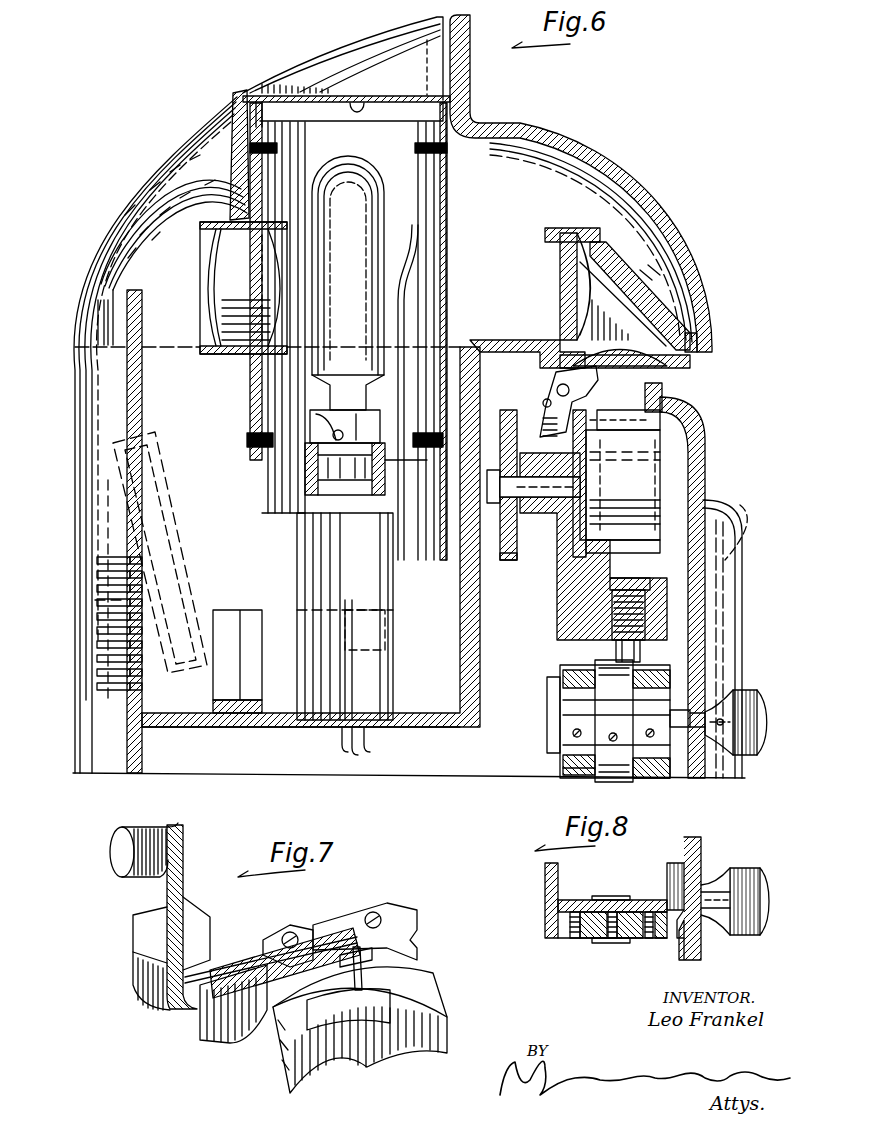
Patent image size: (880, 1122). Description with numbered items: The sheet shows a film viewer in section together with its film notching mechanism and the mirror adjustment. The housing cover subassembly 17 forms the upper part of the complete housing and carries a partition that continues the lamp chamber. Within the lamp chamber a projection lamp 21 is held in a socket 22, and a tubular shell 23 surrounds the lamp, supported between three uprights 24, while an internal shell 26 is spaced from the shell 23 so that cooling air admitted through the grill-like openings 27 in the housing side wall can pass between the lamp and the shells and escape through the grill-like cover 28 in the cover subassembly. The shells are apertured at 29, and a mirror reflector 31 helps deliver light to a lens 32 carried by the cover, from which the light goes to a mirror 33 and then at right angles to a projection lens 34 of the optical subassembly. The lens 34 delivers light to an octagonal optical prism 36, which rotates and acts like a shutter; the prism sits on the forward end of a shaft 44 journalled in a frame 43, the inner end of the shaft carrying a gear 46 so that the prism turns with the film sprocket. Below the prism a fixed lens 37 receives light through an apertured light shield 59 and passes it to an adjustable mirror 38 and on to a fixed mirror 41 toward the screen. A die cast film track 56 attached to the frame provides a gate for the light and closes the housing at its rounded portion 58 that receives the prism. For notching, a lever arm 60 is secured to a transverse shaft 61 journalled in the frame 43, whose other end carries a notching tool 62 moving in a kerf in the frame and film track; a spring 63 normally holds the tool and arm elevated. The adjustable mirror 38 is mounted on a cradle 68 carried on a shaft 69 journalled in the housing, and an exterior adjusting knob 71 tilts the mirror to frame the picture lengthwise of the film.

In FIG. 6, the housing cover subassembly 17 is at (713, 284).
In FIG. 6, the projection lamp 21 is at (378, 180).
In FIG. 6, the socket 22 is at (380, 478).
In FIG. 6, the tubular shell 23 is at (253, 505).
In FIG. 6, the uprights 24 is at (258, 690).
In FIG. 6, the internal shell 26 is at (265, 396).
In FIG. 6, the grill-like openings 27 is at (100, 690).
In FIG. 6, the grill-like cover 28 is at (380, 99).
In FIG. 6, the aperture 29 is at (438, 292).
In FIG. 6, the mirror reflector 31 is at (207, 302).
In FIG. 6, the lens 32 is at (560, 305).
In FIG. 6, the mirror 33 is at (590, 256).
In FIG. 6, the lens 34 is at (642, 363).
In FIG. 6, the octagonal optical prism 36 is at (650, 488).
In FIG. 6, the fixed lens 37 is at (643, 583).
In FIG. 6, the adjustable mirror 38 is at (560, 758).
In FIG. 8, the adjustable mirror 38 is at (647, 900).
In FIG. 6, the fixed mirror 41 is at (165, 458).
In FIG. 6, the frame 43 is at (557, 567).
In FIG. 6, the shaft 44 is at (540, 488).
In FIG. 6, the gear 46 is at (498, 557).
In FIG. 6, the die cast film track 56 is at (663, 393).
In FIG. 7, the die cast film track 56 is at (282, 1055).
In FIG. 6, the rounded portion 58 is at (695, 425).
In FIG. 6, the light shield 59 is at (663, 552).
In FIG. 7, the lever arm 60 is at (168, 878).
In FIG. 7, the transverse shaft 61 is at (252, 993).
In FIG. 7, the notching tool 62 is at (405, 939).
In FIG. 6, the spring 63 is at (540, 420).
In FIG. 8, the cradle 68 is at (560, 940).
In FIG. 8, the shaft 69 is at (701, 944).
In FIG. 6, the adjusting knob 71 is at (747, 688).
In FIG. 8, the adjusting knob 71 is at (747, 867).